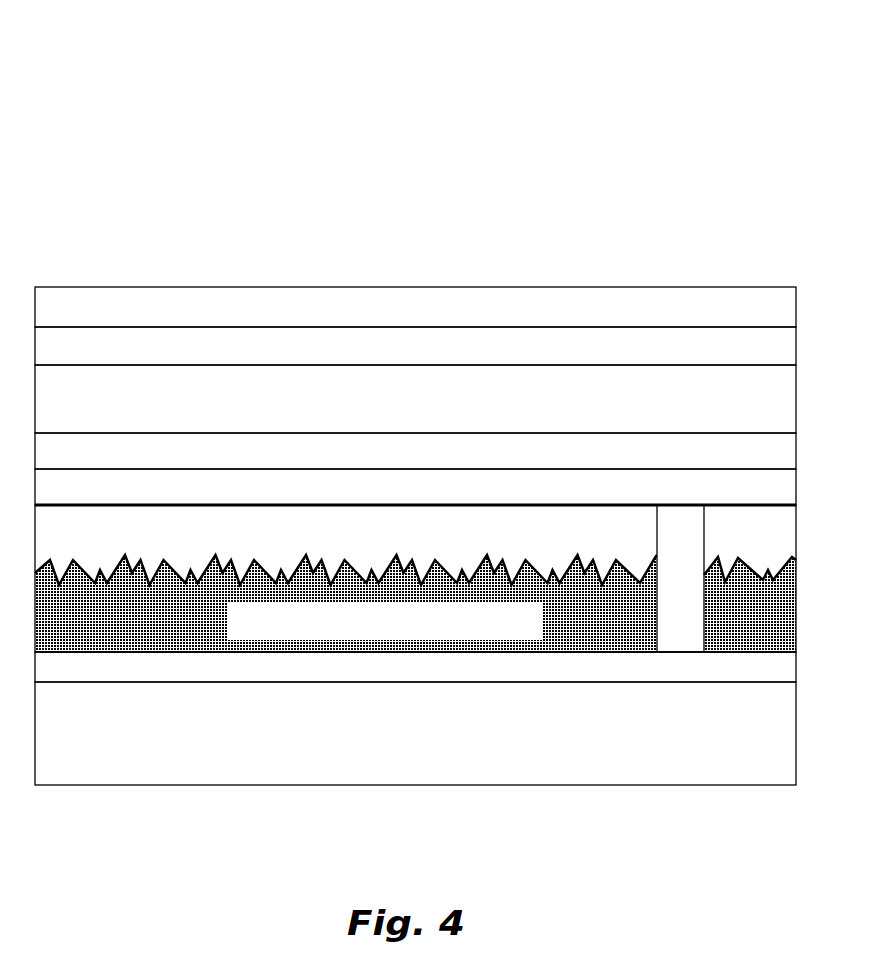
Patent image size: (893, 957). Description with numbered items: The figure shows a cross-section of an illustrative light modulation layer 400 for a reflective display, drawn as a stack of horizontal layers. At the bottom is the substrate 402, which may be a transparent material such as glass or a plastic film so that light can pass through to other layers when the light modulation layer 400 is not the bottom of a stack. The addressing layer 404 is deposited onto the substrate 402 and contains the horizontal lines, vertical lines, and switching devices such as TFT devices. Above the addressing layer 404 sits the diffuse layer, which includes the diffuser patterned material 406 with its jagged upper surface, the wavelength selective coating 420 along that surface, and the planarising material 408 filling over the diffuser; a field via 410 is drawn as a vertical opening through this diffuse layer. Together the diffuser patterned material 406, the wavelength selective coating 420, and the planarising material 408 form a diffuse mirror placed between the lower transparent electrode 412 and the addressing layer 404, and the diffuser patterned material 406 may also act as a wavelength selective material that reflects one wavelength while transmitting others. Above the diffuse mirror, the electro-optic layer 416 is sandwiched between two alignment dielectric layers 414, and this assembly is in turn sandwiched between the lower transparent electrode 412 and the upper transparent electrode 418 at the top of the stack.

The light modulation layer 400 is at (169, 126).
The substrate 402 is at (415, 733).
The addressing layer 404 is at (415, 667).
The diffuser patterned material 406 is at (415, 603).
The planarising material 408 is at (415, 578).
The field via 410 is at (678, 533).
The lower transparent electrode 412 is at (415, 487).
The alignment dielectric layer 414 is at (415, 398).
The electro-optic layer 416 is at (415, 399).
The upper transparent electrode 418 is at (415, 307).
The wavelength selective coating 420 is at (503, 560).